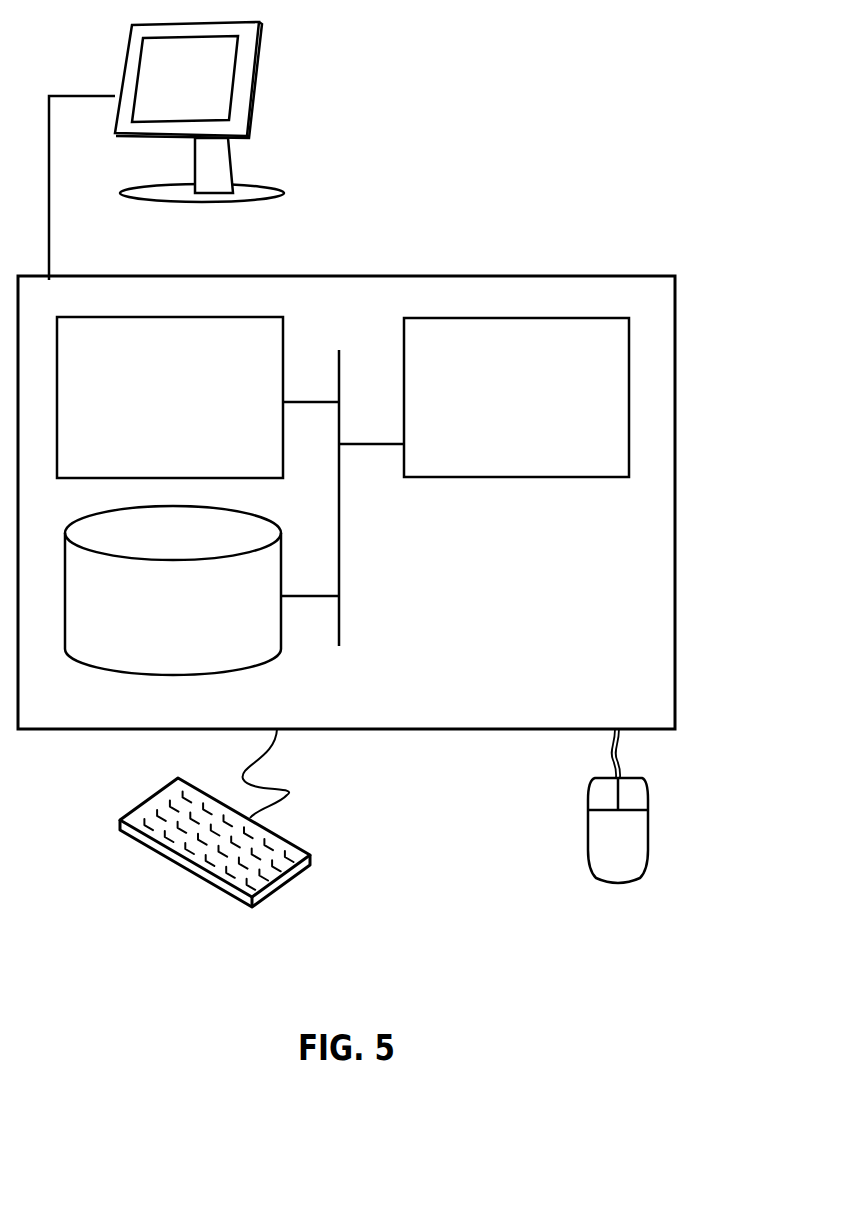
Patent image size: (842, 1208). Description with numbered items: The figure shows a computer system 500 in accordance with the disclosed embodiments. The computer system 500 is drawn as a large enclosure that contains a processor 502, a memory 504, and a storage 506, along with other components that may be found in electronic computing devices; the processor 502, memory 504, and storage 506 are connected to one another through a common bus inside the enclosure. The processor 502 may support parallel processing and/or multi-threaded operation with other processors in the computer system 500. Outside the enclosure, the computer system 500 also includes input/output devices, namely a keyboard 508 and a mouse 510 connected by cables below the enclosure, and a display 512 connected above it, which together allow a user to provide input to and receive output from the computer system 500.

The computer system 500 is at (393, 255).
The processor 502 is at (542, 410).
The memory 504 is at (192, 410).
The storage 506 is at (198, 622).
The keyboard 508 is at (140, 842).
The mouse 510 is at (638, 852).
The display 512 is at (166, 151).